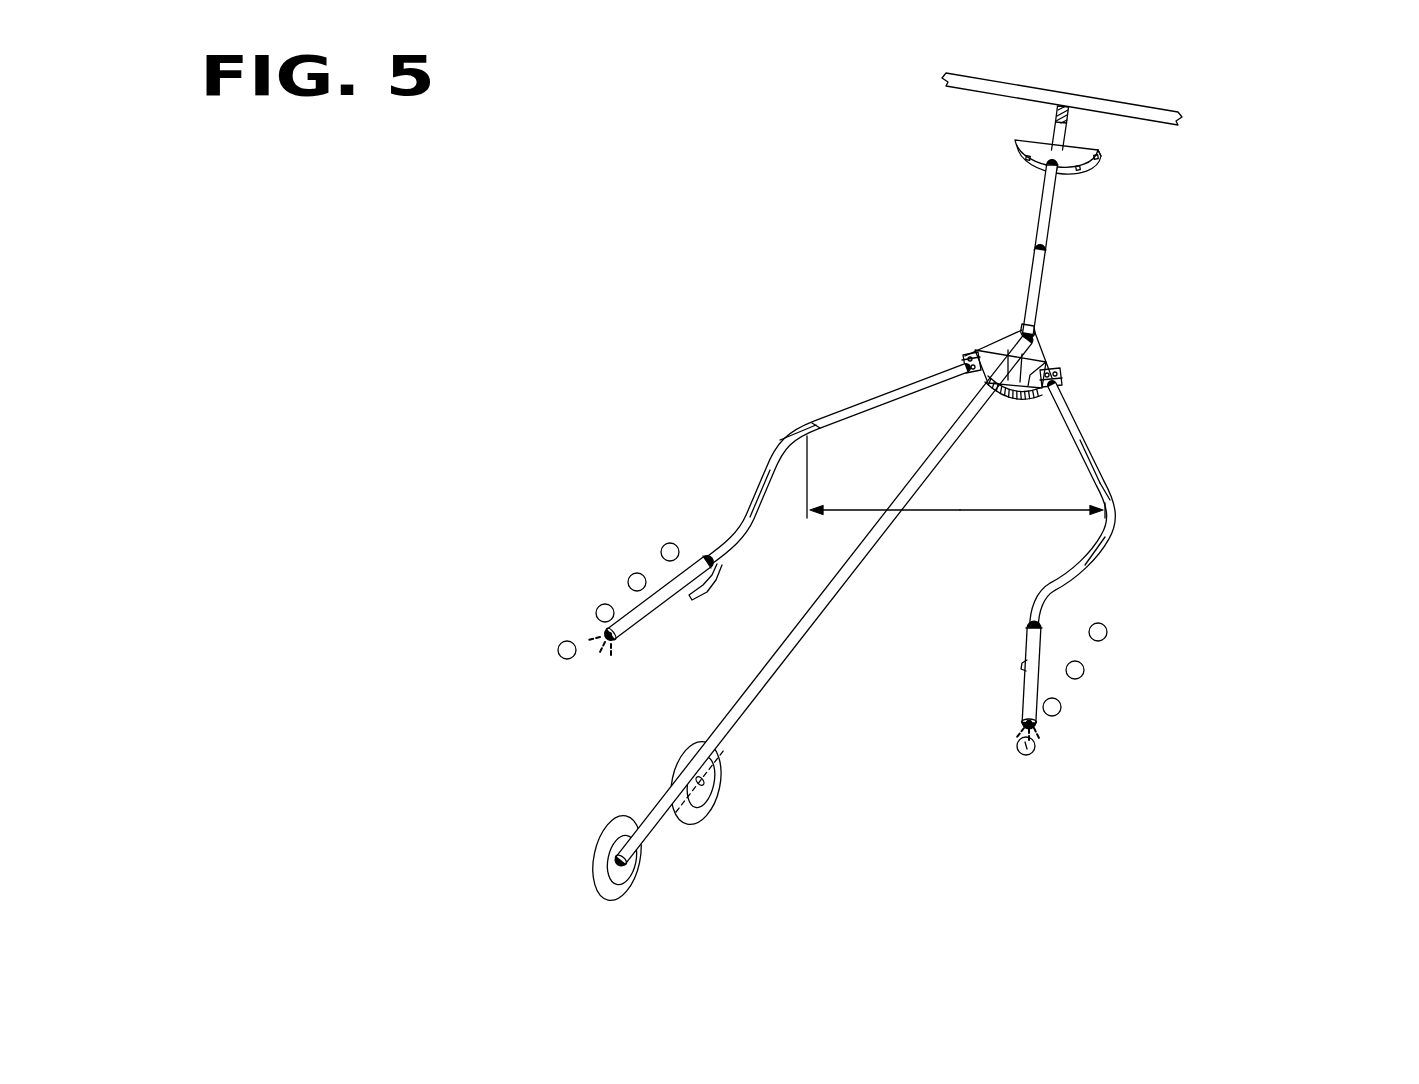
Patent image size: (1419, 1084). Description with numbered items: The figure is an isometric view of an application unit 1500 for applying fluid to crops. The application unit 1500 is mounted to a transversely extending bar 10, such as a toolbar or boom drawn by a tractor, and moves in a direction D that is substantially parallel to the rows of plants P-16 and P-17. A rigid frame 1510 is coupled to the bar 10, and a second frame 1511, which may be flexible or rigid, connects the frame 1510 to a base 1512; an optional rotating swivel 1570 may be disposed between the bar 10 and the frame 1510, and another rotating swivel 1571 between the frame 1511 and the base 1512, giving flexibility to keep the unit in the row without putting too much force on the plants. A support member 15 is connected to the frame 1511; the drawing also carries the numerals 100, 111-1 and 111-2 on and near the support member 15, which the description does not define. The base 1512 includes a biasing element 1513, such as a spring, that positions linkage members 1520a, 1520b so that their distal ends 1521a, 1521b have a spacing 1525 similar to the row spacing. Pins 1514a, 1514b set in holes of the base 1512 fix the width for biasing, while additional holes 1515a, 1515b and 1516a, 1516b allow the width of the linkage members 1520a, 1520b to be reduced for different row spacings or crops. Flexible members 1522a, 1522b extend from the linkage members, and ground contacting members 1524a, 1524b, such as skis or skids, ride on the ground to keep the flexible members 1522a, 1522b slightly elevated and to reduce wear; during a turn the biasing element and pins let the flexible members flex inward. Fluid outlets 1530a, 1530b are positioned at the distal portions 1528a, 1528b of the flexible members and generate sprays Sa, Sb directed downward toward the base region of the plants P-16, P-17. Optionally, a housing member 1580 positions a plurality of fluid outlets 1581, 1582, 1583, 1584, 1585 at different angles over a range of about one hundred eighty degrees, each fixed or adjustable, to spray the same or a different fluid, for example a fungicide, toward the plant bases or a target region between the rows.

The bar 10 is at (1140, 101).
The support member 15 is at (757, 712).
The apparatus 100 is at (782, 899).
The wheel 111-1 is at (598, 890).
The wheel 111-2 is at (713, 808).
The application unit 1500 is at (743, 148).
The frame 1510 is at (1098, 146).
The frame 1511 is at (1048, 258).
The base 1512 is at (1018, 335).
The biasing element 1513 is at (1010, 400).
The pin 1514a is at (975, 354).
The pin 1514b is at (1062, 372).
The additional hole 1515a is at (968, 369).
The additional hole 1515b is at (1062, 390).
The additional hole 1516a is at (960, 376).
The additional hole 1516b is at (1062, 400).
The linkage member 1520a is at (808, 425).
The linkage member 1520b is at (1093, 456).
The distal end 1521a is at (806, 433).
The distal end 1521b is at (1110, 485).
The flexible member 1522a is at (731, 474).
The flexible member 1522b is at (1129, 548).
The ground contacting member 1524a is at (706, 601).
The ground contacting member 1524b is at (1022, 666).
The spacing 1525 is at (972, 512).
The distal portion 1528a is at (648, 620).
The distal portion 1528b is at (1022, 700).
The fluid outlet 1530a is at (600, 628).
The fluid outlet 1530b is at (1038, 727).
The rotating swivel 1570 is at (1063, 104).
The rotating swivel 1571 is at (1045, 316).
The housing member 1580 is at (1052, 135).
The fluid outlet 1581 is at (1020, 150).
The fluid outlet 1582 is at (1040, 168).
The fluid outlet 1583 is at (1064, 172).
The fluid outlet 1584 is at (1092, 160).
The fluid outlet 1585 is at (1101, 157).
The direction D is at (1114, 312).
The spray Sa is at (598, 640).
The spray Sb is at (1016, 738).
The row of plants P-16 is at (545, 678).
The row of plants P-17 is at (1024, 779).